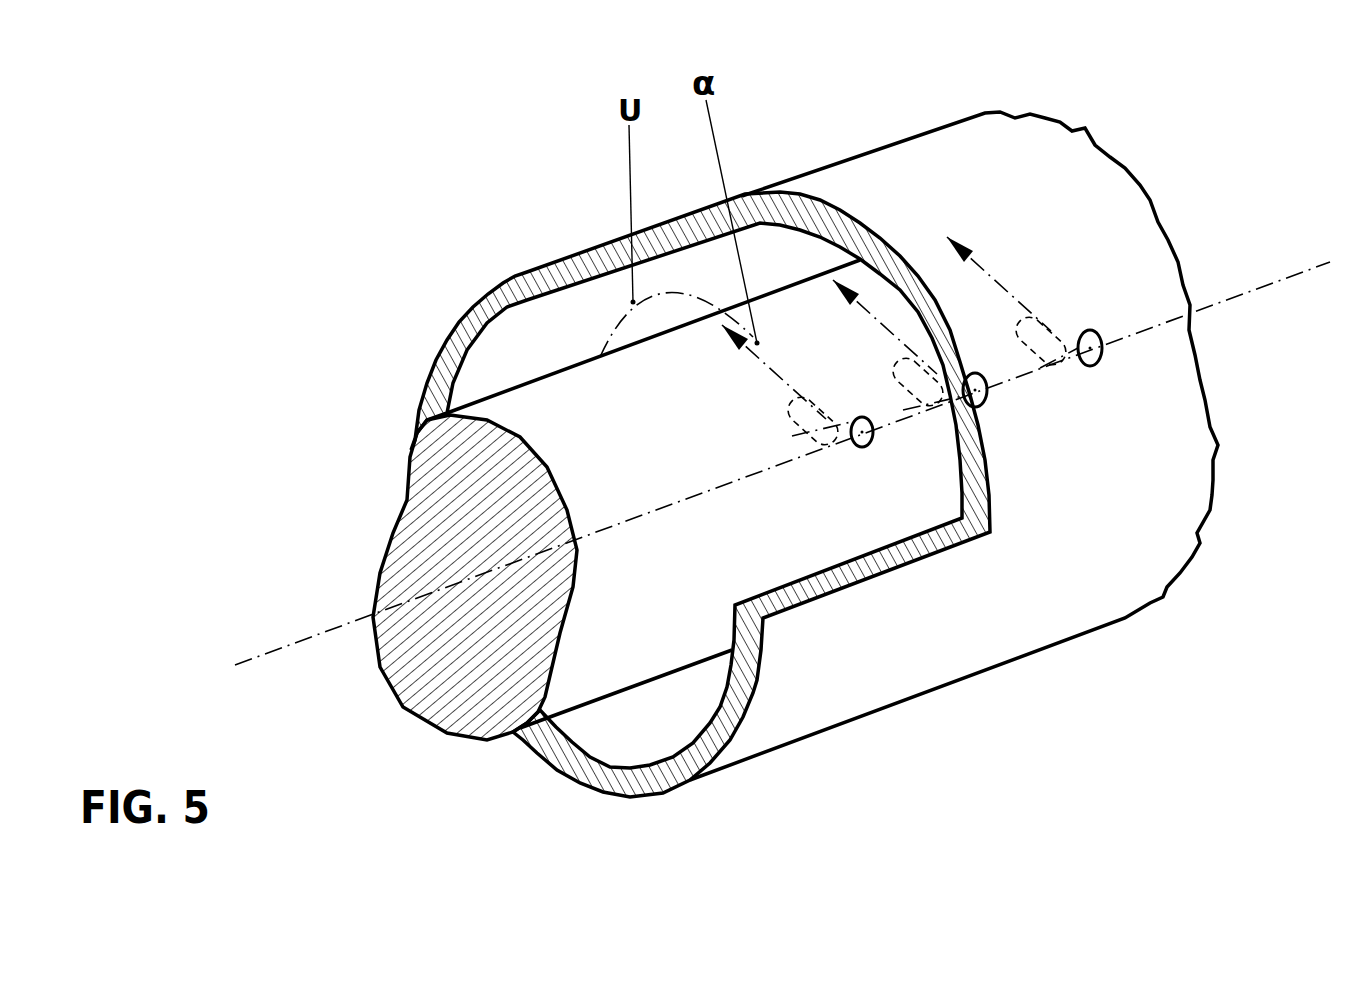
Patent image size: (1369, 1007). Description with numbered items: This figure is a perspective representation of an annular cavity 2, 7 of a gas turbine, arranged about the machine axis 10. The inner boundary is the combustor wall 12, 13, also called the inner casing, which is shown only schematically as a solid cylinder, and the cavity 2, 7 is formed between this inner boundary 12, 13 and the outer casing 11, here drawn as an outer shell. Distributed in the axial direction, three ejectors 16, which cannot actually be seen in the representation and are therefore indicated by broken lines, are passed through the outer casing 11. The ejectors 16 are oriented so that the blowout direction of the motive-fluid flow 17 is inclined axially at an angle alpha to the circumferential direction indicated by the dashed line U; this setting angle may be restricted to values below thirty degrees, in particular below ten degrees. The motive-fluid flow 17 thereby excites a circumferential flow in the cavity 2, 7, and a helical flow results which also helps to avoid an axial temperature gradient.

The plenum 2 is at (700, 494).
The annular cavity 7 is at (665, 747).
The machine axis 10 is at (252, 660).
The outer casing 11 is at (860, 185).
The combustor wall 12 is at (616, 435).
The combustor wall 13 is at (547, 413).
The ejector 16 is at (1058, 367).
The motive-fluid flow 17 is at (777, 373).